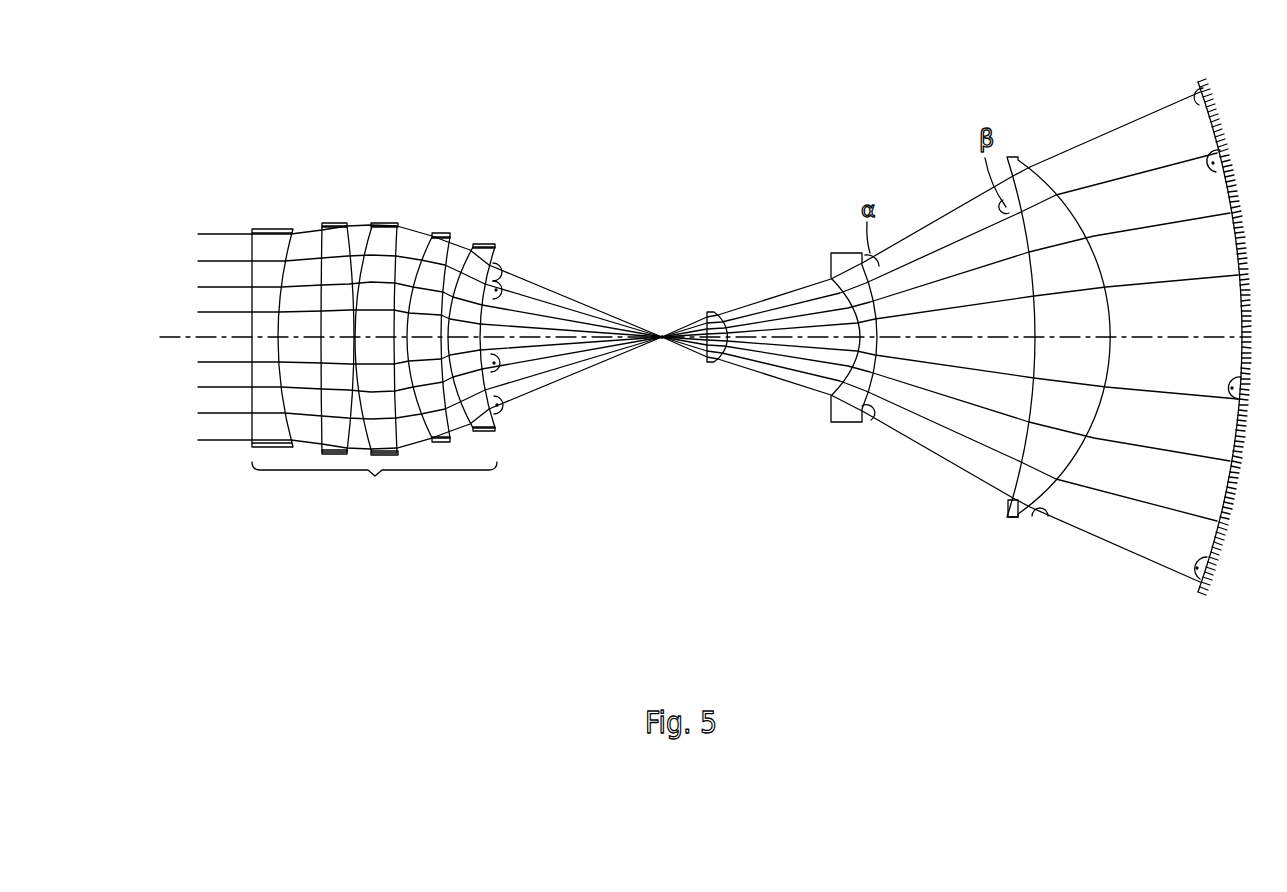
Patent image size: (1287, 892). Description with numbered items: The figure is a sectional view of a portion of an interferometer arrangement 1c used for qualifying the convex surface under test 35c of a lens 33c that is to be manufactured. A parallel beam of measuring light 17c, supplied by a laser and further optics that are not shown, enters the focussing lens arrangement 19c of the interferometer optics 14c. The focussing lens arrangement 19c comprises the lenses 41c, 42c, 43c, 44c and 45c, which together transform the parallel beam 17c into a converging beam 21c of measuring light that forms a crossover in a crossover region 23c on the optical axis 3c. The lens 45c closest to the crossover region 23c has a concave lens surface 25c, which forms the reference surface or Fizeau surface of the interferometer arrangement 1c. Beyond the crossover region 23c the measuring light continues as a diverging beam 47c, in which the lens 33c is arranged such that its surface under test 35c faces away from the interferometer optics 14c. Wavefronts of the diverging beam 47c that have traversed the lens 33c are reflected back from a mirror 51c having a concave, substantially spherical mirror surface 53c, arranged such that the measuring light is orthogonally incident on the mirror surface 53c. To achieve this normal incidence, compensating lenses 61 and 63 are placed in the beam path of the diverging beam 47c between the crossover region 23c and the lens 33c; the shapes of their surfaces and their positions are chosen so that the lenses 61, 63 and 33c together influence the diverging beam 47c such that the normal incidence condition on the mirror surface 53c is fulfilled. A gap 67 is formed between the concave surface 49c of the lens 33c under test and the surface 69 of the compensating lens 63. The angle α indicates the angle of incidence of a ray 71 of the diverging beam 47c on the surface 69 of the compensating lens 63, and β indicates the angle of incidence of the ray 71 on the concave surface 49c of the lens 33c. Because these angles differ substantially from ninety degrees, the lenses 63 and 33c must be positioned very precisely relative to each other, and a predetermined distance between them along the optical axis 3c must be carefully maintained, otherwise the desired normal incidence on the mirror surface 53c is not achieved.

The interferometer arrangement 1c is at (684, 186).
The optical axis 3c is at (181, 336).
The interferometer optics 14c is at (426, 146).
The parallel beam of measuring light 17c is at (221, 446).
The focussing lens arrangement 19c is at (374, 486).
The converging beam of measuring light 21c is at (569, 296).
The crossover region 23c is at (663, 335).
The concave lens surface 25c is at (495, 266).
The lens 33c is at (1012, 522).
The surface under test 35c is at (1047, 515).
The lens 41c is at (265, 228).
The lens 42c is at (333, 223).
The lens 43c is at (384, 223).
The lens 44c is at (441, 234).
The lens 45c is at (485, 243).
The diverging beam of measuring light 47c is at (915, 223).
The concave surface 49c is at (1006, 478).
The mirror 51c is at (1214, 107).
The mirror surface 53c is at (1198, 103).
The compensating lens 61 is at (712, 367).
The compensating lens 63 is at (847, 252).
The gap 67 is at (919, 477).
The surface of compensating lens 69 is at (870, 427).
The ray 71 is at (972, 227).